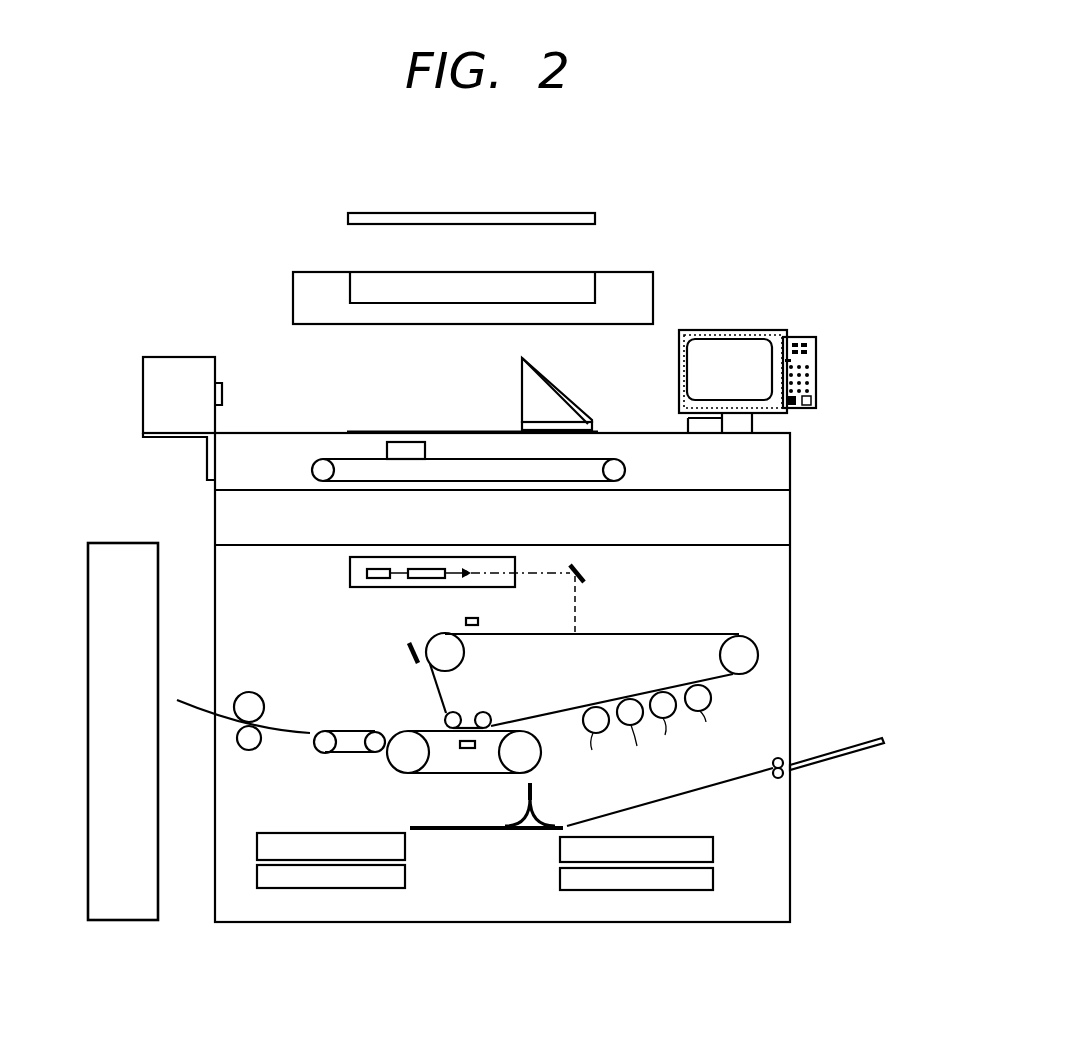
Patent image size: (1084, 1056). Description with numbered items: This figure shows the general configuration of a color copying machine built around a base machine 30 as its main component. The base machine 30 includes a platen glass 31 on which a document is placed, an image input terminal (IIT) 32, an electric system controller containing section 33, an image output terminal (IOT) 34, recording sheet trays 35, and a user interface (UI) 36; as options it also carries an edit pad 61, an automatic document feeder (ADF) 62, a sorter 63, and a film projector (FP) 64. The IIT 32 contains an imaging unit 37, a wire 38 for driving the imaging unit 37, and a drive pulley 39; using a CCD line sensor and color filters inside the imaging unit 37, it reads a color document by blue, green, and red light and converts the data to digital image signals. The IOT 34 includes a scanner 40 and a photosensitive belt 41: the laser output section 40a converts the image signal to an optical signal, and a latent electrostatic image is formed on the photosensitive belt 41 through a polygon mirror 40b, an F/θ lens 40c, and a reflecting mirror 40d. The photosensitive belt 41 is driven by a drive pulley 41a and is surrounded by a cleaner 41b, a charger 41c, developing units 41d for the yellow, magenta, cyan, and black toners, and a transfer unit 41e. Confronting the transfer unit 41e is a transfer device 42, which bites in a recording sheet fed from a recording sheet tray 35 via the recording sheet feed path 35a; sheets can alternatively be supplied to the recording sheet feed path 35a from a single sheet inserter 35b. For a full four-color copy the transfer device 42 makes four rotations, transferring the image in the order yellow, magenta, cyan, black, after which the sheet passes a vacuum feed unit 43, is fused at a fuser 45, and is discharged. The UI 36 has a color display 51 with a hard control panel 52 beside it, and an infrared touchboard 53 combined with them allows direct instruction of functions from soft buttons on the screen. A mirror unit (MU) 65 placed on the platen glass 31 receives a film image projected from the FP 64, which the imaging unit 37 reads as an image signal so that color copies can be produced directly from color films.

The base machine 30 is at (338, 925).
The platen glass 31 is at (445, 432).
The image input terminal (IIT) 32 is at (762, 466).
The electric system controller containing section 33 is at (752, 527).
The image output terminal (IOT) 34 is at (722, 622).
The recording sheet trays 35 is at (552, 858).
The recording sheet feed path 35a is at (535, 790).
The SSI (single sheet inserter) 35b is at (836, 760).
The user interface (UI) 36 is at (775, 342).
The imaging unit 37 is at (403, 443).
The wire 38 is at (340, 459).
The drive pulley 39 is at (618, 464).
The scanner 40 is at (350, 567).
The laser output section 40a is at (373, 578).
The polygon mirror 40b is at (412, 580).
The F/θ lens 40c is at (472, 580).
The reflecting mirror 40d is at (589, 575).
The photosensitive belt 41 is at (625, 634).
The drive pulley 41a is at (455, 657).
The cleaner 41b is at (405, 653).
The charger 41c is at (478, 621).
The developing units 41d is at (667, 762).
The transfer unit 41e is at (465, 752).
The transfer device 42 is at (432, 775).
The vacuum feed unit 43 is at (337, 752).
The fuser 45 is at (248, 690).
The color display 51 is at (755, 352).
The hard control panel 52 is at (812, 360).
The infrared touchboard 53 is at (693, 330).
The edit pad 61 is at (575, 212).
The automatic document feeder (ADF) 62 is at (636, 272).
The sorter 63 is at (100, 810).
The film projector (FP) 64 is at (193, 357).
The mirror unit (MU) 65 is at (545, 392).